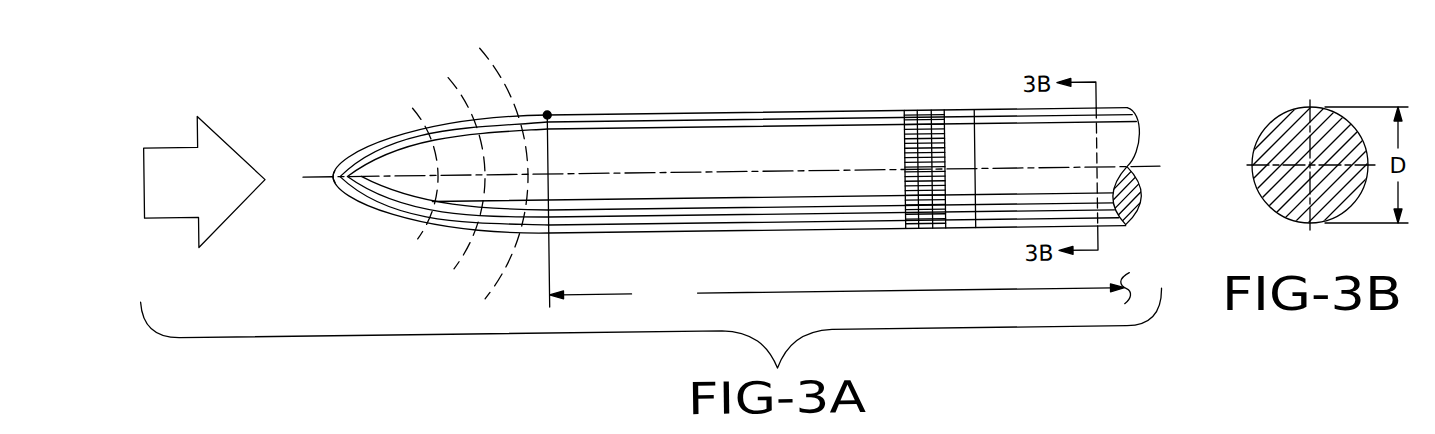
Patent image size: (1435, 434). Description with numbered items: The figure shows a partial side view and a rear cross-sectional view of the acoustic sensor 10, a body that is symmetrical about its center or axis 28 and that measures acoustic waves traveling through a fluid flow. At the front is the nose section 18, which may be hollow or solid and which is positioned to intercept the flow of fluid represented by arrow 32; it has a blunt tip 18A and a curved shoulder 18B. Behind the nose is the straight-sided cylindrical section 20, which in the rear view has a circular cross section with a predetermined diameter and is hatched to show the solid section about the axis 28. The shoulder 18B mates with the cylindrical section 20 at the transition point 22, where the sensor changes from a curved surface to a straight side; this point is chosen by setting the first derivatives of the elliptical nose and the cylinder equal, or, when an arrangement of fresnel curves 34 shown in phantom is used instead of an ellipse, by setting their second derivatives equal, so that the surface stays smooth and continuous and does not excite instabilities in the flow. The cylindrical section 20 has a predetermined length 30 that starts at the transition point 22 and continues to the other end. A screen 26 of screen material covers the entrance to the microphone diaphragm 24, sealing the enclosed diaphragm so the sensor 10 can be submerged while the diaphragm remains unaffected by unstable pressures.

In FIG. 3A, the acoustic sensor 10 is at (856, 97).
In FIG. 3A, the nose section 18 is at (392, 134).
In FIG. 3A, the blunt tip 18A is at (332, 173).
In FIG. 3A, the shoulder 18B is at (502, 113).
In FIG. 3A, the straight-sided cylindrical section 20 is at (649, 114).
In FIG. 3B, the straight-sided cylindrical section 20 is at (1279, 118).
In FIG. 3A, the transition point 22 is at (547, 112).
In FIG. 3A, the microphone diaphragm 24 is at (1000, 143).
In FIG. 3A, the screen 26 is at (925, 114).
In FIG. 3A, the axis 28 is at (703, 173).
In FIG. 3B, the axis 28 is at (1309, 164).
In FIG. 3A, the predetermined length 30 is at (838, 209).
In FIG. 3A, the arrow 32 is at (172, 143).
In FIG. 3A, the fresnel curves 34 is at (460, 261).